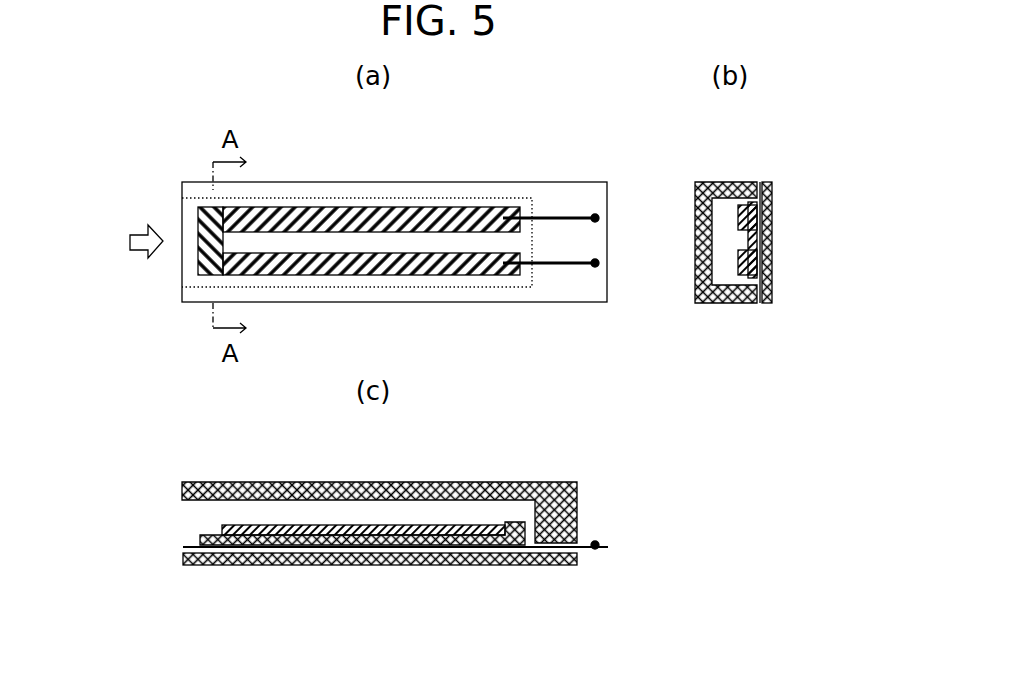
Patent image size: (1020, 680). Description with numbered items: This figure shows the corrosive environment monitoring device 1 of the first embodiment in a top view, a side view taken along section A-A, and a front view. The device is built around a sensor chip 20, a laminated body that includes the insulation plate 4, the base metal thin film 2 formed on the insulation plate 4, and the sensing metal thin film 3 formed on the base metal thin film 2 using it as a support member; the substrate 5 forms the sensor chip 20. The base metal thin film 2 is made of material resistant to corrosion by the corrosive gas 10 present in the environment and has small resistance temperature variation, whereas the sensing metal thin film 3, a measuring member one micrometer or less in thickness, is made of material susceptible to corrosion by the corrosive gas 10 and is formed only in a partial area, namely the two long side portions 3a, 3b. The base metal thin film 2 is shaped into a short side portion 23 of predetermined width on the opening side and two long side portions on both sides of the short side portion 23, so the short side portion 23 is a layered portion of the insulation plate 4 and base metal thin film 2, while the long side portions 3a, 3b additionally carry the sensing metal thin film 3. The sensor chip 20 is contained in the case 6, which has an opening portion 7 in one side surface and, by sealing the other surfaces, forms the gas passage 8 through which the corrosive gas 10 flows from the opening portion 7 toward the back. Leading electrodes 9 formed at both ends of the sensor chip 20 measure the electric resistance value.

The corrosive environment monitoring device 1 is at (558, 182).
The base metal thin film 2 is at (200, 538).
The sensing metal thin film 3 is at (731, 200).
The long side portion 3a is at (350, 208).
The long side portion 3b is at (345, 276).
The insulation plate 4 is at (768, 200).
The substrate 5 is at (492, 294).
The case 6 is at (578, 500).
The opening portion 7 is at (181, 216).
The gas passage 8 is at (525, 206).
The leading electrodes 9 is at (555, 266).
The corrosive gas 10 is at (136, 232).
The sensor chip 20 is at (136, 534).
The short side portion 23 is at (198, 270).